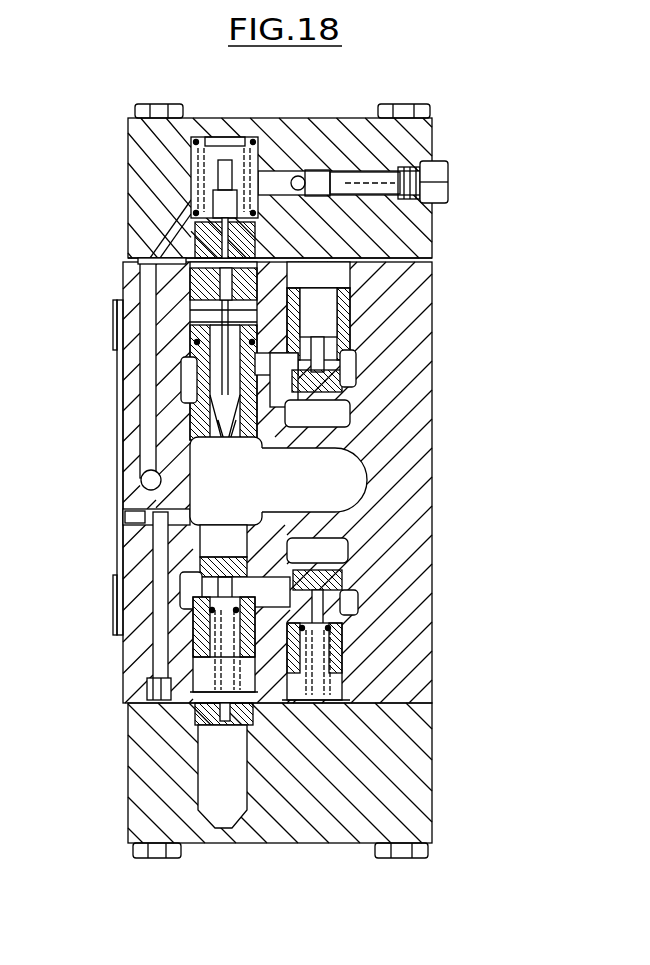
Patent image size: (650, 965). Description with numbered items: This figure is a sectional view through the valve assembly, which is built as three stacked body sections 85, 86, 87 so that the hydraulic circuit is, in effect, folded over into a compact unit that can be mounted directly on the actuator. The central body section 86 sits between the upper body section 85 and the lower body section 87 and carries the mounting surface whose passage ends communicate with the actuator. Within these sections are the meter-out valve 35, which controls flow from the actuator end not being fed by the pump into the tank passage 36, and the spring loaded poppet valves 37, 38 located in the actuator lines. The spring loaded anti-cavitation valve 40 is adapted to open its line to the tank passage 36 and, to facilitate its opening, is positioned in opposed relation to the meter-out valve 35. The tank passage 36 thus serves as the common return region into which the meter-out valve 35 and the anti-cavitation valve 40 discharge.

The meter-out valve 35 is at (185, 268).
The tank passage 36 is at (245, 501).
The spring loaded poppet valve 37 is at (337, 337).
The spring loaded poppet valve 38 is at (335, 660).
The spring loaded anti-cavitation valve 40 is at (200, 642).
The body section 85 is at (428, 232).
The central body section 86 is at (420, 487).
The body section 87 is at (418, 792).